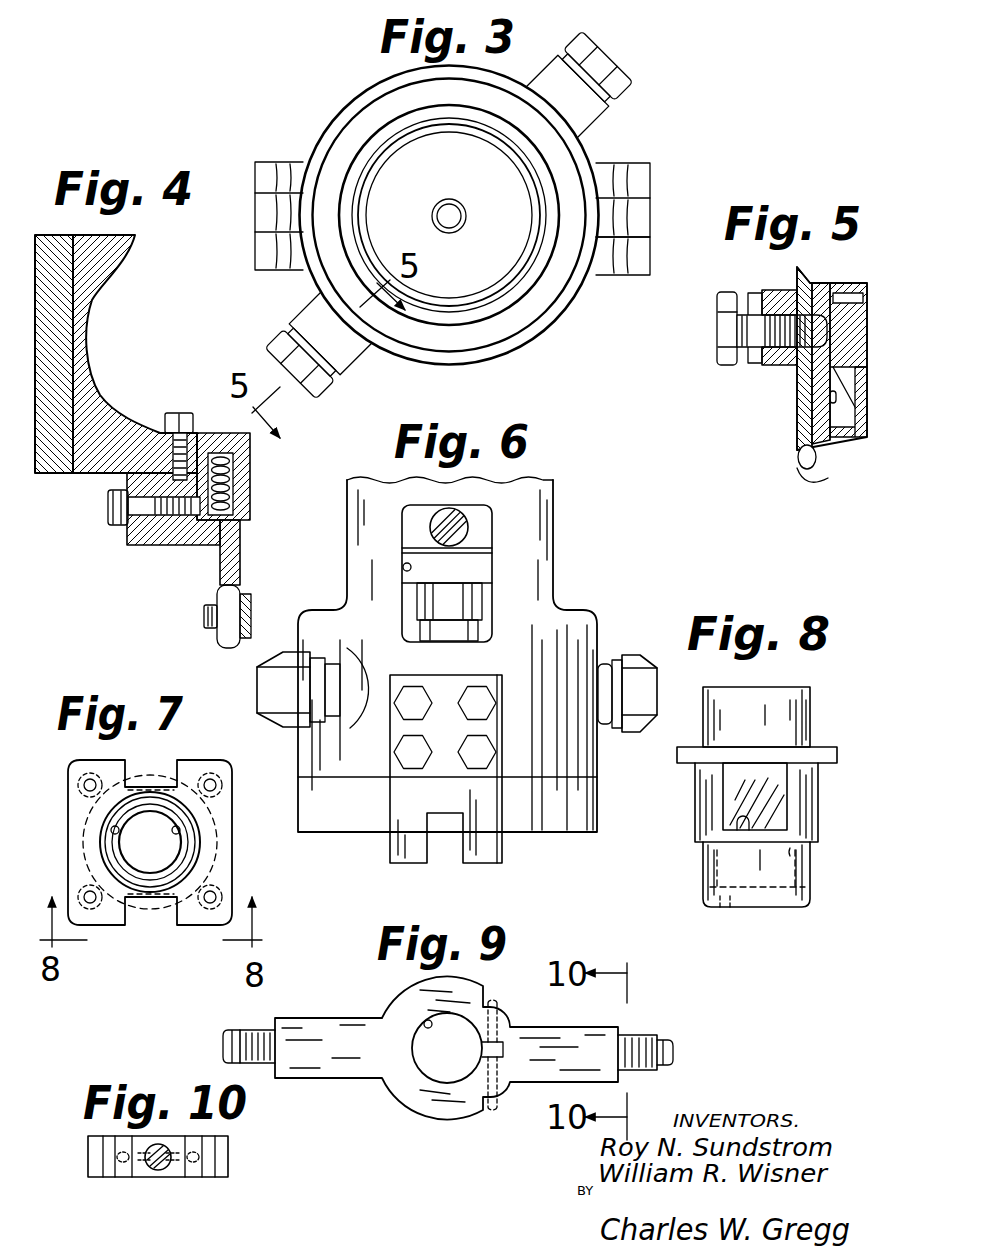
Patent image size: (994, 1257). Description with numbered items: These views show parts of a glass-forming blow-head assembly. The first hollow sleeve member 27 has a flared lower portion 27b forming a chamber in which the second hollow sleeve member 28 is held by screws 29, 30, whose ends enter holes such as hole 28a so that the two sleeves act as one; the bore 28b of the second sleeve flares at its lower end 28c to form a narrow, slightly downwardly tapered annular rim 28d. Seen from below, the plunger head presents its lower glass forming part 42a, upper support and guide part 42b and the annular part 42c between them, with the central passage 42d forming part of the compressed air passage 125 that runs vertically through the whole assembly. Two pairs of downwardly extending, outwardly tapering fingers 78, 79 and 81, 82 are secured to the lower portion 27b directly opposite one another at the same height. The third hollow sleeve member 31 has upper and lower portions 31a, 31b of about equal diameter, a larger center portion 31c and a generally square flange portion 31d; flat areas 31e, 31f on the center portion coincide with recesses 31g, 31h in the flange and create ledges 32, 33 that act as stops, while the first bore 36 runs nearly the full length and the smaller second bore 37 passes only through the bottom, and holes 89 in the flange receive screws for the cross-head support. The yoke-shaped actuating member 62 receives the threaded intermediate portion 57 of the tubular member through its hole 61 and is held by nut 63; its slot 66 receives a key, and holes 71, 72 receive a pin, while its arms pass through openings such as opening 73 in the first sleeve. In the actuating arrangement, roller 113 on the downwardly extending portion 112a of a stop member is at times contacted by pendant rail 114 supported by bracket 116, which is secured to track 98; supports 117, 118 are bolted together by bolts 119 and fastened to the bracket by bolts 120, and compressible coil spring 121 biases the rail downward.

In FIG. 6, the first hollow sleeve member 27 is at (533, 536).
In FIG. 5, the lower portion of sleeve member 27b is at (793, 295).
In FIG. 6, the lower portion of sleeve member 27b is at (590, 633).
In FIG. 3, the second hollow sleeve member 28 is at (540, 302).
In FIG. 5, the second hollow sleeve member 28 is at (805, 428).
In FIG. 6, the second hollow sleeve member 28 is at (575, 830).
In FIG. 5, the hole 28a is at (817, 323).
In FIG. 5, the bore 28b is at (829, 397).
In FIG. 5, the lower end of bore 28c is at (798, 453).
In FIG. 3, the annular rim 28d is at (523, 343).
In FIG. 5, the annular rim 28d is at (830, 466).
In FIG. 6, the annular rim 28d is at (327, 823).
In FIG. 3, the screw 29 is at (318, 391).
In FIG. 5, the screw 29 is at (727, 331).
In FIG. 6, the screw 29 is at (268, 684).
In FIG. 3, the screw 30 is at (630, 84).
In FIG. 6, the screw 30 is at (638, 660).
In FIG. 7, the third hollow sleeve member 31 is at (236, 768).
In FIG. 8, the third hollow sleeve member 31 is at (692, 791).
In FIG. 7, the upper portion of sleeve member 31a is at (190, 817).
In FIG. 8, the upper portion of sleeve member 31a is at (806, 705).
In FIG. 8, the lower portion of sleeve member 31b is at (806, 881).
In FIG. 7, the center portion of sleeve member 31c is at (86, 838).
In FIG. 8, the center portion of sleeve member 31c is at (810, 806).
In FIG. 7, the flange portion 31d is at (234, 874).
In FIG. 8, the flange portion 31d is at (680, 753).
In FIG. 7, the flat area 31e is at (150, 899).
In FIG. 8, the flat area 31e is at (776, 794).
In FIG. 7, the flat area 31f is at (140, 784).
In FIG. 7, the recess 31g is at (128, 920).
In FIG. 7, the recess 31h is at (121, 758).
In FIG. 7, the ledge 32 is at (156, 899).
In FIG. 8, the ledge 32 is at (749, 832).
In FIG. 7, the ledge 33 is at (158, 781).
In FIG. 7, the first bore 36 is at (112, 829).
In FIG. 8, the first bore 36 is at (806, 858).
In FIG. 7, the second bore 37 is at (178, 832).
In FIG. 8, the second bore 37 is at (730, 905).
In FIG. 3, the lower glass forming part 42a is at (470, 192).
In FIG. 3, the upper support and guide part 42b is at (541, 176).
In FIG. 3, the annular part 42c is at (544, 226).
In FIG. 3, the passage 42d is at (456, 233).
In FIG. 6, the intermediate portion of tubular member 57 is at (457, 607).
In FIG. 9, the hole 61 is at (426, 1020).
In FIG. 6, the yoke-shaped member 62 is at (430, 520).
In FIG. 9, the yoke-shaped member 62 is at (368, 1058).
In FIG. 10, the yoke-shaped member 62 is at (108, 1178).
In FIG. 6, the nut 63 is at (475, 570).
In FIG. 9, the slot 66 is at (488, 1057).
In FIG. 9, the hole 71 is at (493, 1010).
In FIG. 10, the hole 71 is at (193, 1177).
In FIG. 9, the hole 72 is at (493, 1107).
In FIG. 10, the hole 72 is at (127, 1177).
In FIG. 6, the opening 73 is at (403, 567).
In FIG. 3, the finger 78 is at (258, 243).
In FIG. 6, the finger 78 is at (397, 850).
In FIG. 3, the finger 79 is at (258, 177).
In FIG. 6, the finger 79 is at (497, 850).
In FIG. 3, the finger 81 is at (641, 185).
In FIG. 3, the finger 82 is at (642, 262).
In FIG. 7, the hole 89 is at (88, 895).
In FIG. 4, the track or rail 98 is at (85, 289).
In FIG. 4, the downwardly extending portion 112a is at (277, 583).
In FIG. 4, the roller 113 is at (218, 631).
In FIG. 4, the pendant rail or track 114 is at (221, 573).
In FIG. 4, the bracket 116 is at (56, 465).
In FIG. 4, the support 117 is at (172, 538).
In FIG. 4, the support 118 is at (251, 466).
In FIG. 4, the bolt 119 is at (171, 415).
In FIG. 4, the bolt 120 is at (120, 508).
In FIG. 4, the compressible coil spring 121 is at (233, 497).
In FIG. 3, the compressed air passage 125 is at (461, 208).